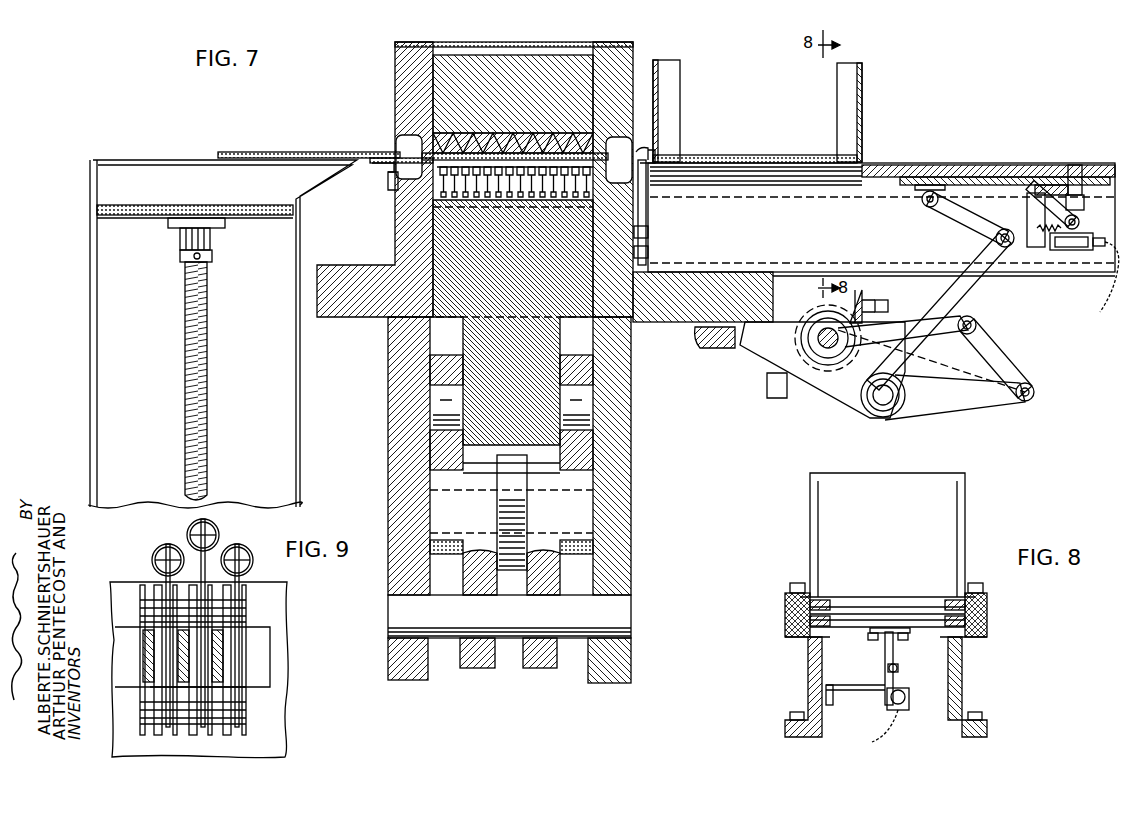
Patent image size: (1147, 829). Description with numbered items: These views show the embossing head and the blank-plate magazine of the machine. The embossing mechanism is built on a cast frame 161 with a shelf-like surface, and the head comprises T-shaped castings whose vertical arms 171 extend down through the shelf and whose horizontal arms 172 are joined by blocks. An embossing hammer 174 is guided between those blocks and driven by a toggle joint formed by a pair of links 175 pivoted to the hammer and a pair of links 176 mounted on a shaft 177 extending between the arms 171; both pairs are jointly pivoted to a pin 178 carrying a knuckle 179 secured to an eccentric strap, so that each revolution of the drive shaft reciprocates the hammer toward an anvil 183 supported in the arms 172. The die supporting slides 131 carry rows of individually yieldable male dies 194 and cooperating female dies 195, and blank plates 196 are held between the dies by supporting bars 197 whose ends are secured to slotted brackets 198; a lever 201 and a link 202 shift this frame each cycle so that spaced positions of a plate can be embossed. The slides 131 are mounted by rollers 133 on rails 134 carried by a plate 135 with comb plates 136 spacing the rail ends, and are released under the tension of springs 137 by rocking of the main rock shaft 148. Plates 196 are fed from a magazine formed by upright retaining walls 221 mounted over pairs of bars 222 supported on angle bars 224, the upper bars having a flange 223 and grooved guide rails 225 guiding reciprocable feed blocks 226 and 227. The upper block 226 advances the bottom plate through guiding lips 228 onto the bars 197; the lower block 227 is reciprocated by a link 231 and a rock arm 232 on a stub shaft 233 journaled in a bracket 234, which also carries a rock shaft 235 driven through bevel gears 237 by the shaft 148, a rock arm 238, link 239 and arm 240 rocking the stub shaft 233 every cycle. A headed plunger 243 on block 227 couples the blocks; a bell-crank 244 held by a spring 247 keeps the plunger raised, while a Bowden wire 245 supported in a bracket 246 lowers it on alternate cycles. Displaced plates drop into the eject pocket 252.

In FIG. 9, the differentially settable slide 131 is at (235, 663).
In FIG. 9, the roller 133 is at (145, 597).
In FIG. 9, the rail 134 is at (225, 675).
In FIG. 9, the plate 135 is at (275, 713).
In FIG. 9, the comb plate 136 is at (262, 641).
In FIG. 9, the spring 137 is at (241, 546).
In FIG. 7, the rock shaft 148 is at (712, 345).
In FIG. 7, the frame 161 is at (662, 322).
In FIG. 7, the vertical arm 171 is at (395, 460).
In FIG. 7, the horizontal arm 172 is at (394, 52).
In FIG. 7, the embossing hammer 174 is at (447, 253).
In FIG. 7, the link 175 is at (445, 360).
In FIG. 7, the link 176 is at (540, 669).
In FIG. 7, the shaft 177 is at (398, 611).
In FIG. 7, the pin 178 is at (570, 554).
In FIG. 7, the knuckle 179 is at (508, 572).
In FIG. 7, the anvil 183 is at (435, 115).
In FIG. 7, the male die 194 is at (437, 205).
In FIG. 7, the female die 195 is at (433, 140).
In FIG. 7, the blank plate 196 is at (277, 152).
In FIG. 7, the supporting bar 197 is at (381, 166).
In FIG. 7, the slotted bracket 198 is at (393, 186).
In FIG. 7, the lever 201 is at (648, 232).
In FIG. 7, the link 202 is at (650, 258).
In FIG. 7, the retaining wall 221 is at (672, 77).
In FIG. 8, the retaining wall 221 is at (812, 531).
In FIG. 8, the bar 222 is at (785, 625).
In FIG. 8, the flange 223 is at (955, 600).
In FIG. 7, the angle bar 224 is at (850, 233).
In FIG. 8, the angle bar 224 is at (812, 673).
In FIG. 8, the grooved guide rail 225 is at (790, 638).
In FIG. 7, the upper feed block 226 is at (985, 165).
In FIG. 8, the upper feed block 226 is at (863, 605).
In FIG. 7, the lower feed block 227 is at (1003, 178).
In FIG. 8, the lower feed block 227 is at (895, 622).
In FIG. 7, the guiding lip 228 is at (645, 152).
In FIG. 7, the link 231 is at (970, 218).
In FIG. 8, the link 231 is at (885, 665).
In FIG. 7, the rock arm 232 is at (975, 292).
In FIG. 7, the stub shaft 233 is at (878, 405).
In FIG. 7, the bracket 234 is at (815, 380).
In FIG. 7, the rock shaft 235 is at (820, 345).
In FIG. 7, the bevel gears 237 is at (865, 305).
In FIG. 7, the rock arm 238 is at (935, 338).
In FIG. 7, the link 239 is at (1012, 362).
In FIG. 7, the arm 240 is at (958, 400).
In FIG. 7, the headed plunger 243 is at (1077, 165).
In FIG. 7, the bell-crank 244 is at (1036, 250).
In FIG. 8, the bell-crank 244 is at (885, 700).
In FIG. 7, the Bowden wire 245 is at (1080, 256).
In FIG. 8, the Bowden wire 245 is at (880, 742).
In FIG. 7, the bracket 246 is at (1076, 234).
In FIG. 8, the bracket 246 is at (852, 691).
In FIG. 7, the spring 247 is at (1030, 215).
In FIG. 8, the spring 247 is at (897, 668).
In FIG. 7, the eject pocket 252 is at (90, 333).